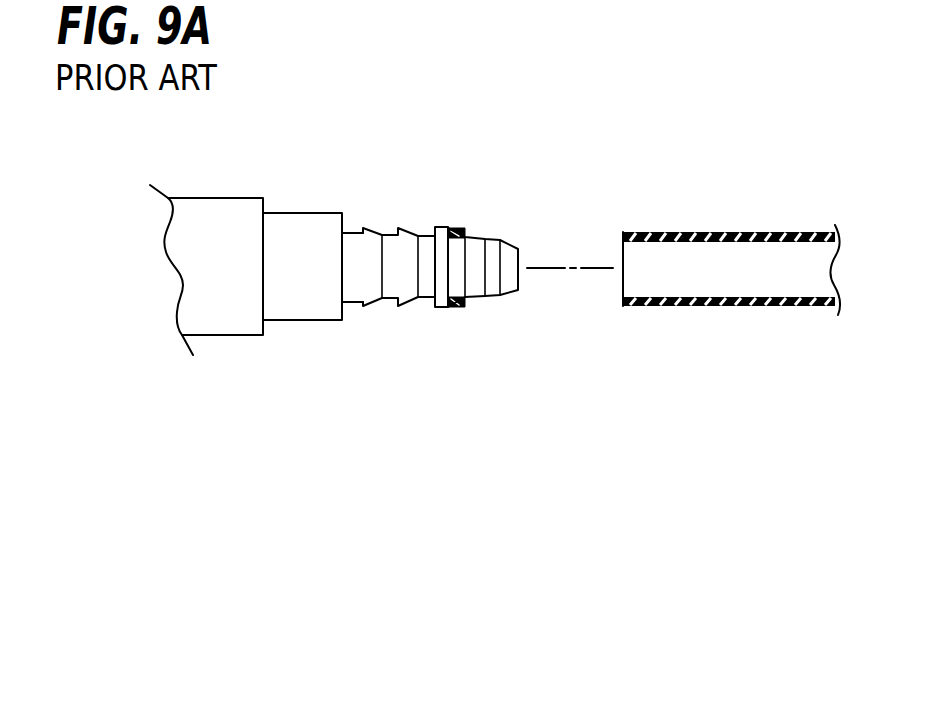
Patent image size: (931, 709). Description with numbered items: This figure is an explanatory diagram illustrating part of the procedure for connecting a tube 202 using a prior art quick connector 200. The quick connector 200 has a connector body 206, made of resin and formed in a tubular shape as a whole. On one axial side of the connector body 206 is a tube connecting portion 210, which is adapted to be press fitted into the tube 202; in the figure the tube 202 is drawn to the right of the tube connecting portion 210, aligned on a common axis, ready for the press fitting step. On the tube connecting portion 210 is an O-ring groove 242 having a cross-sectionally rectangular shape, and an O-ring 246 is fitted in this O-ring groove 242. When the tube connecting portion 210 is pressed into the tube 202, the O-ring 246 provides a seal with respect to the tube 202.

The quick connector 200 is at (372, 138).
The tube 202 is at (760, 218).
The connector body 206 is at (303, 184).
The tube connecting portion 210 is at (386, 316).
The O-ring groove 242 is at (456, 228).
The O-ring 246 is at (452, 308).